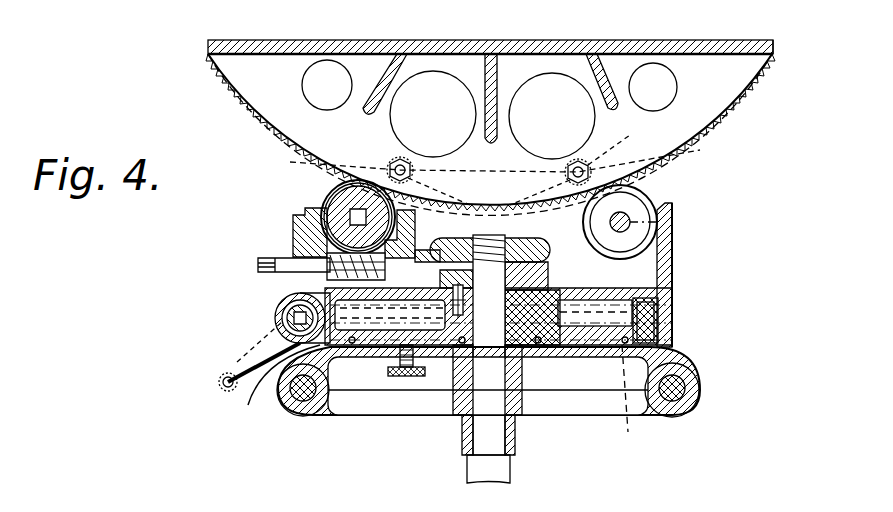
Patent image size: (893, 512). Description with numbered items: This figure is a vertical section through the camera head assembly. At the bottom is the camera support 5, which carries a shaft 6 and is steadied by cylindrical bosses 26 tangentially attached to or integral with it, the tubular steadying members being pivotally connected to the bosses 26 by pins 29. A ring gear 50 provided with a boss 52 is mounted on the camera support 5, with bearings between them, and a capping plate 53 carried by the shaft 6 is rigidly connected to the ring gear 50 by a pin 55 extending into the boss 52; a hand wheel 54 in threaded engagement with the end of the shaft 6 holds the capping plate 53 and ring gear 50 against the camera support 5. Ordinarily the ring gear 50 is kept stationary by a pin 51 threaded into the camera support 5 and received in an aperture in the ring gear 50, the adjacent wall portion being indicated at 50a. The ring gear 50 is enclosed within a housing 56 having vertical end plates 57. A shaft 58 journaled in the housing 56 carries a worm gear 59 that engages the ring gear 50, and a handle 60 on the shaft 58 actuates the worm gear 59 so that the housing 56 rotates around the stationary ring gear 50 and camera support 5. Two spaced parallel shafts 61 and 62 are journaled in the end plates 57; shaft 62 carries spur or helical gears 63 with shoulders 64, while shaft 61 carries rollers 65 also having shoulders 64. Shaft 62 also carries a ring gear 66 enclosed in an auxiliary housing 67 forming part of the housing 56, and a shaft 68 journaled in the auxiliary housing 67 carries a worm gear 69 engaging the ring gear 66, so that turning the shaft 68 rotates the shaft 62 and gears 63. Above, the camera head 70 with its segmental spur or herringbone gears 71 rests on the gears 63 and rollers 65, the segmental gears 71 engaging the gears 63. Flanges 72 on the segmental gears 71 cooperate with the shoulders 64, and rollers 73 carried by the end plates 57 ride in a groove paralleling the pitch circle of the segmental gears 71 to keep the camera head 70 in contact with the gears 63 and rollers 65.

The camera support 5 is at (680, 357).
The shaft 6 is at (510, 470).
The cylindrical bosses 26 is at (298, 408).
The pins 29 is at (310, 397).
The ring gear 50 is at (672, 318).
The housing wall 50a is at (645, 395).
The pin 51 is at (372, 335).
The boss 52 is at (555, 302).
The capping plate 53 is at (540, 280).
The hand wheel 54 is at (550, 247).
The pin 55 is at (452, 352).
The housing 56 is at (657, 300).
The vertical end plates 57 is at (662, 256).
The shaft 58 is at (285, 318).
The worm gear 59 is at (262, 395).
The handle 60 is at (228, 377).
The shaft 61 is at (630, 214).
The shaft 62 is at (295, 230).
The spur or helical gears 63 is at (337, 210).
The shoulders 64 is at (660, 223).
The rollers 65 is at (660, 222).
The ring gear 66 is at (337, 210).
The auxiliary housing 67 is at (365, 183).
The shaft 68 is at (262, 272).
The worm gear 69 is at (405, 260).
The camera head 70 is at (735, 42).
The segmental spur or herringbone gears 71 is at (723, 118).
The flanges 72 is at (752, 82).
The rollers 73 is at (597, 152).